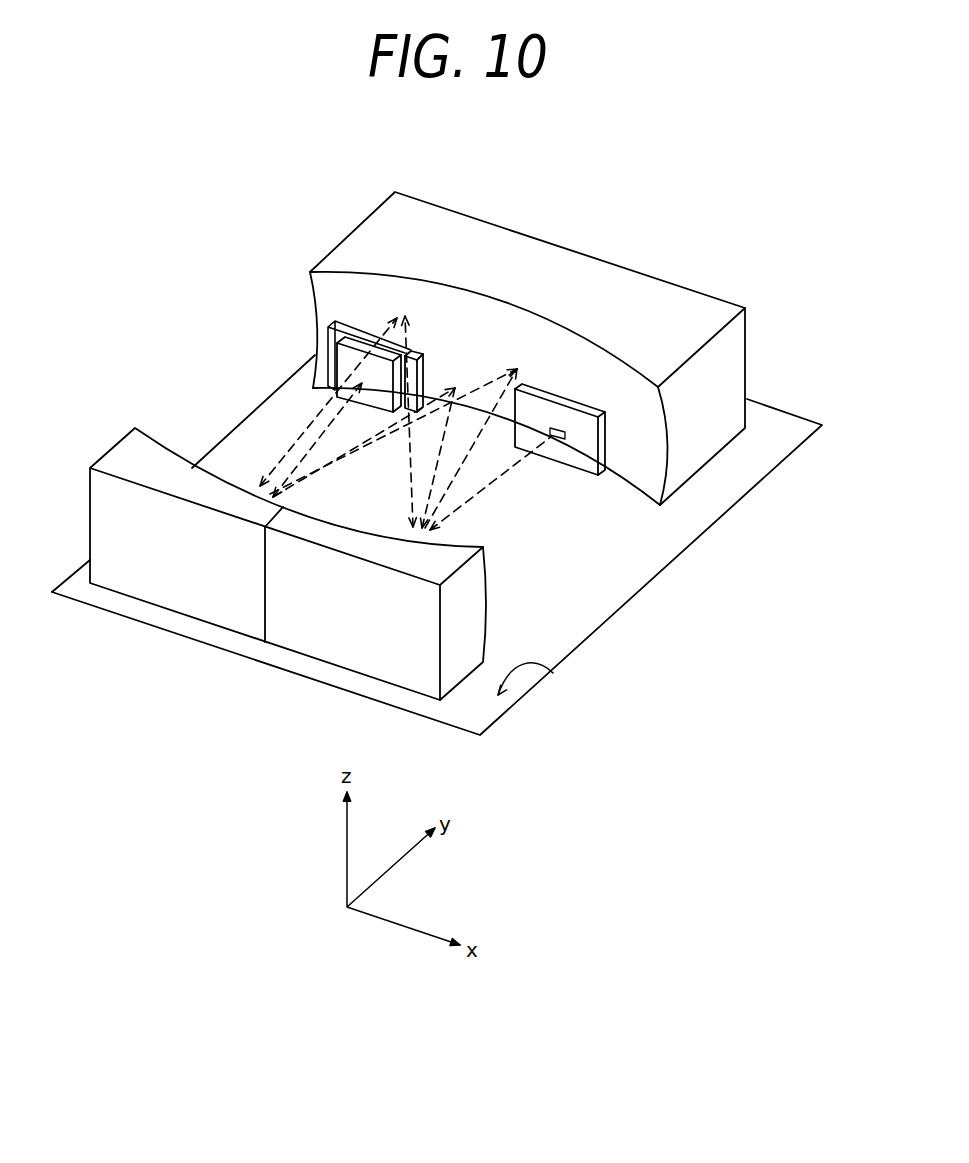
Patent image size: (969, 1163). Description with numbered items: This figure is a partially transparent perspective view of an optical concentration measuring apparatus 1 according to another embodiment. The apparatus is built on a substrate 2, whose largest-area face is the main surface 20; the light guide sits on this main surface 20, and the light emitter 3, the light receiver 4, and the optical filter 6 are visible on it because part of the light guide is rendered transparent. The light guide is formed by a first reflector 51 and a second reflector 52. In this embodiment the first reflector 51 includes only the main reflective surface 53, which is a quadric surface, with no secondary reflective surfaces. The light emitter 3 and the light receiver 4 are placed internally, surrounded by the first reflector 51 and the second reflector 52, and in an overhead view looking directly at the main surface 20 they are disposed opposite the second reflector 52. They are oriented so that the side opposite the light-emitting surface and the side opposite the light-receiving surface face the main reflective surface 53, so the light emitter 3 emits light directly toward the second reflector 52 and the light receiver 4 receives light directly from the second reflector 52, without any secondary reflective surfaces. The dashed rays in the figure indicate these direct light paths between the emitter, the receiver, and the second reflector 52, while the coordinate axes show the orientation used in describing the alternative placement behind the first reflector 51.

The optical concentration measuring apparatus 1 is at (205, 287).
The substrate 2 is at (667, 568).
The light emitter 3 is at (558, 423).
The light receiver 4 is at (410, 373).
The optical filter 6 is at (362, 367).
The main surface 20 is at (553, 673).
The first reflector 51 is at (713, 372).
The second reflector 52 is at (170, 567).
The main reflective surface 53 is at (508, 338).